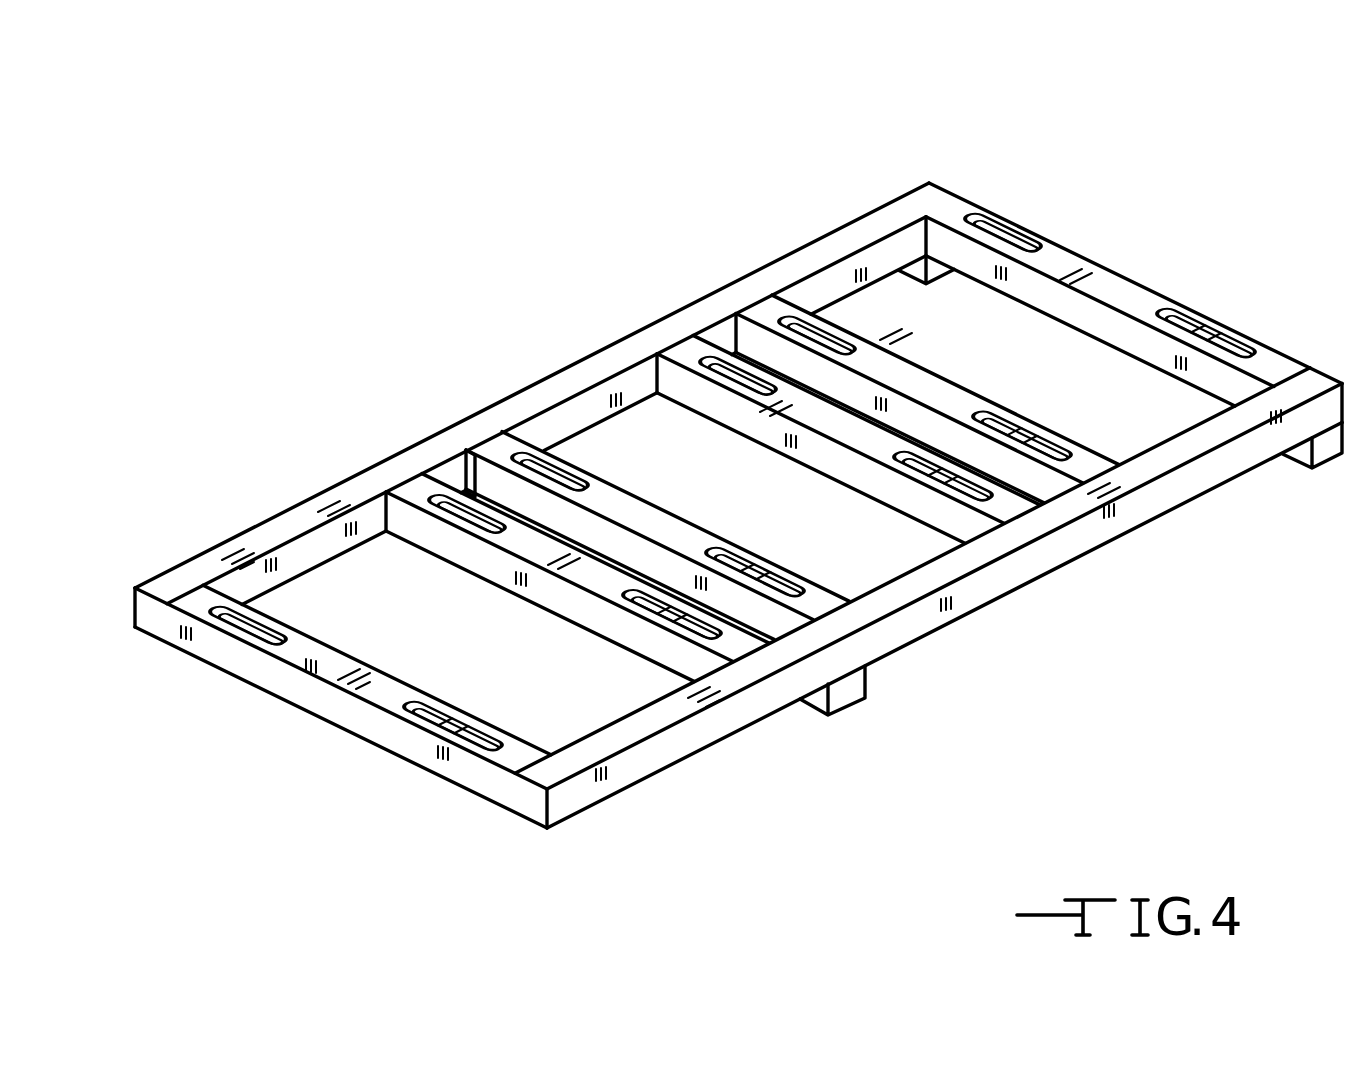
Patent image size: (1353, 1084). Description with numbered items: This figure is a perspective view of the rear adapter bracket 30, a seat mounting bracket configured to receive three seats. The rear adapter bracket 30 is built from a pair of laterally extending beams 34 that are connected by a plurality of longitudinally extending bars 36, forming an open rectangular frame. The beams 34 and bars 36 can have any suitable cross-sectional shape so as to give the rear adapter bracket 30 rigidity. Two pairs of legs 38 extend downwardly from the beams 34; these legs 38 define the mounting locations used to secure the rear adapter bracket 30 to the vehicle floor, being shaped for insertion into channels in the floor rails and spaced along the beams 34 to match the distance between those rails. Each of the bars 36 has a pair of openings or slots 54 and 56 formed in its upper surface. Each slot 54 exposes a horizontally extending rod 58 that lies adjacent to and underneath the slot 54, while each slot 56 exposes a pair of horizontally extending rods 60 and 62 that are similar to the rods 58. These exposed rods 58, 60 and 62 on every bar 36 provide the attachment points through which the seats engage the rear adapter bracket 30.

The rear adapter bracket 30 is at (1134, 164).
The laterally extending beams 34 is at (300, 513).
The longitudinally extending bars 36 is at (1128, 288).
The legs 38 is at (910, 283).
The slot 54 is at (998, 220).
The slot 56 is at (1232, 330).
The horizontally extending rod 58 is at (1020, 228).
The horizontally extending rod 60 is at (1205, 314).
The horizontally extending rod 62 is at (1252, 338).